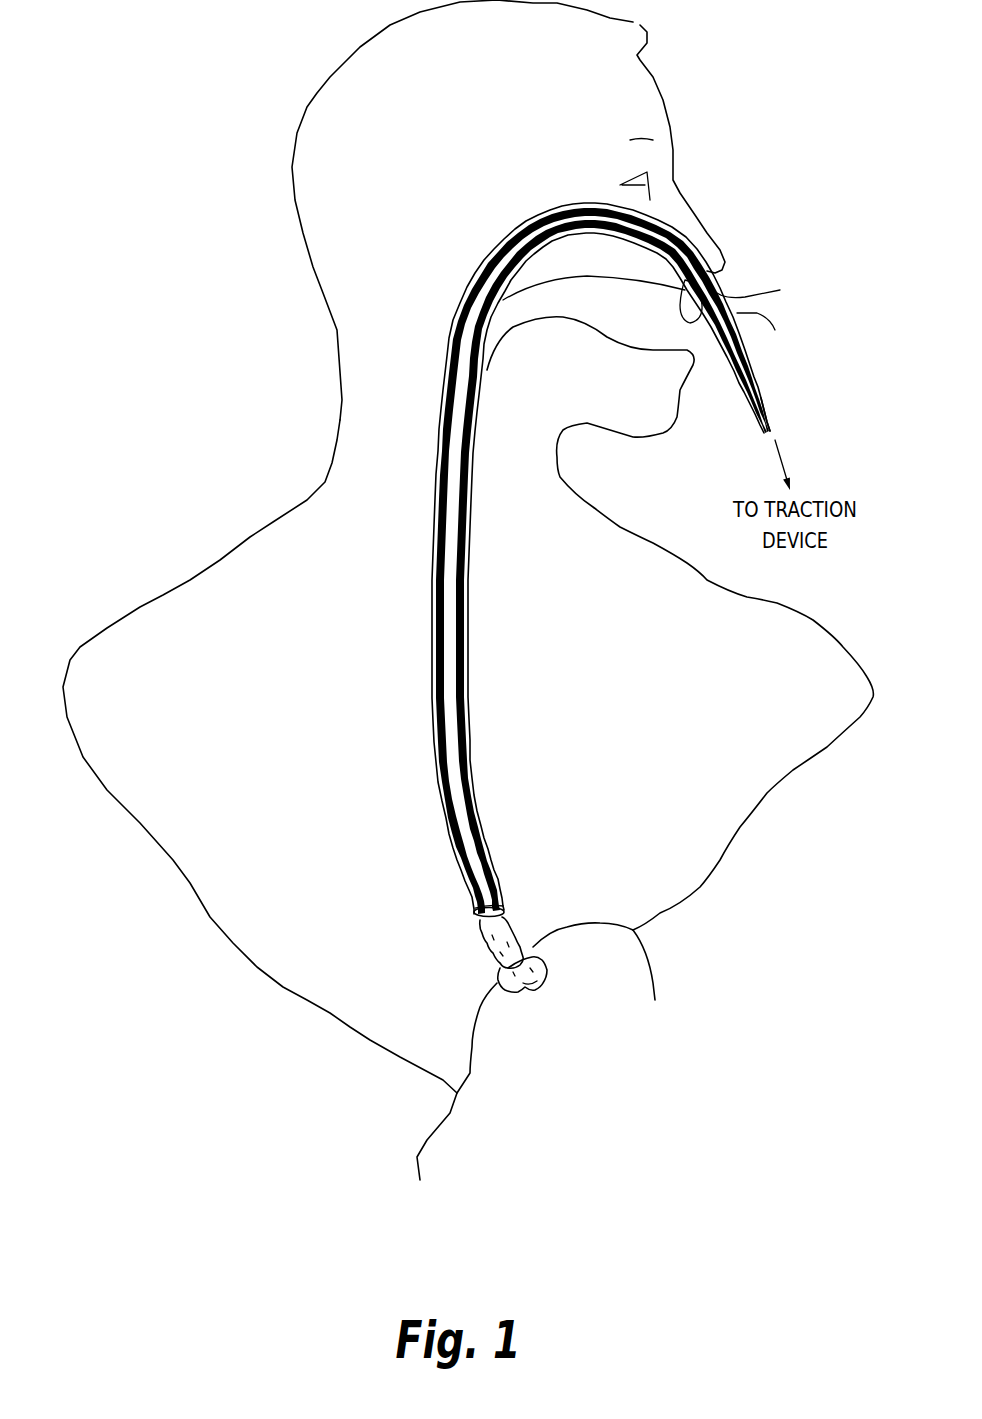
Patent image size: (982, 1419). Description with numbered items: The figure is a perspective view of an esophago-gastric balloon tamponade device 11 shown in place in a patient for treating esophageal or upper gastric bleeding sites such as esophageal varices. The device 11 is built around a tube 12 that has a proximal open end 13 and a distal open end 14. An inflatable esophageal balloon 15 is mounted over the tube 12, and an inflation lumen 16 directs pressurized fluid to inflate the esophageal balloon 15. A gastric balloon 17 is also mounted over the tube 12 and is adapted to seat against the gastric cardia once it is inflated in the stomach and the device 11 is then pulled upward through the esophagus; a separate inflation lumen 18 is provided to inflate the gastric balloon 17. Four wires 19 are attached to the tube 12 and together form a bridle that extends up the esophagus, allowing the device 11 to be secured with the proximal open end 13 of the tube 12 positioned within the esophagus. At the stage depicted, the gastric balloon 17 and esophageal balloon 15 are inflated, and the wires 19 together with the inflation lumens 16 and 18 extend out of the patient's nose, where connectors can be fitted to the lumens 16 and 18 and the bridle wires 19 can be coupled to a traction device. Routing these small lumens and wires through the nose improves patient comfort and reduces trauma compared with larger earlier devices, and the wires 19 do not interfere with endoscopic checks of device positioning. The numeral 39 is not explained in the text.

The balloon tamponade device 11 is at (760, 407).
The tube 12 is at (497, 906).
The proximal open end 13 is at (455, 890).
The distal open end 14 is at (538, 1002).
The inflatable esophageal balloon 15 is at (518, 927).
The inflation lumen 16 is at (718, 307).
The gastric balloon 17 is at (537, 957).
The inflation lumen 18 is at (775, 330).
The wires 19 is at (767, 407).
The intragastric balloon 39 is at (500, 967).